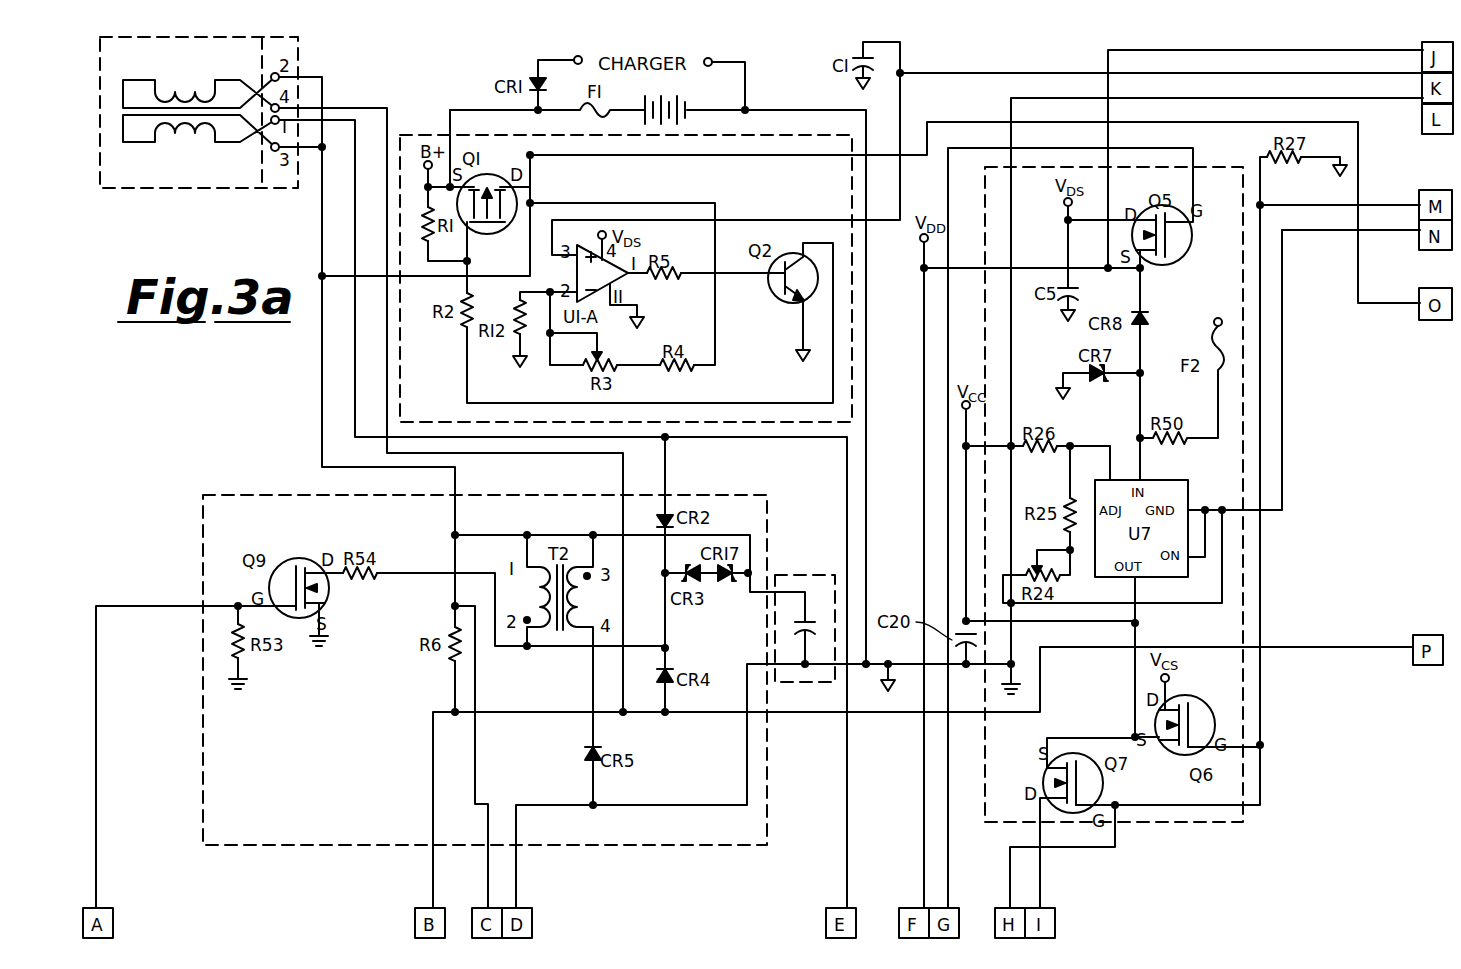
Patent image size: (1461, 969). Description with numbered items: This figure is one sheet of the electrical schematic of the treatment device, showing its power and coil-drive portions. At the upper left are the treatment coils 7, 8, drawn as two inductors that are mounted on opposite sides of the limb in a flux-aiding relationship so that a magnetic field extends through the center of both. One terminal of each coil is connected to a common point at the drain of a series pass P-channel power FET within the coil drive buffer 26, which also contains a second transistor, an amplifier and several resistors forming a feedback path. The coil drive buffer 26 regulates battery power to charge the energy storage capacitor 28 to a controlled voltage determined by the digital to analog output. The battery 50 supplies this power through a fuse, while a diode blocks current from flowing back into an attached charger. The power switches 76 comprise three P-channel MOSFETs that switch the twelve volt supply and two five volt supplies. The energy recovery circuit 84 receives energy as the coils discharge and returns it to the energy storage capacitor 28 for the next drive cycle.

The treatment coil 7 is at (178, 158).
The treatment coil 8 is at (195, 96).
The coil drive buffer 26 is at (442, 134).
The energy storage capacitor 28 is at (797, 575).
The battery 50 is at (673, 104).
The power switches 76 is at (1216, 166).
The energy recovery circuit 84 is at (258, 494).